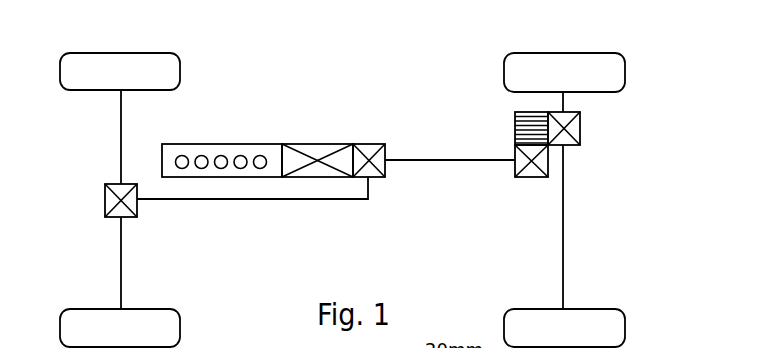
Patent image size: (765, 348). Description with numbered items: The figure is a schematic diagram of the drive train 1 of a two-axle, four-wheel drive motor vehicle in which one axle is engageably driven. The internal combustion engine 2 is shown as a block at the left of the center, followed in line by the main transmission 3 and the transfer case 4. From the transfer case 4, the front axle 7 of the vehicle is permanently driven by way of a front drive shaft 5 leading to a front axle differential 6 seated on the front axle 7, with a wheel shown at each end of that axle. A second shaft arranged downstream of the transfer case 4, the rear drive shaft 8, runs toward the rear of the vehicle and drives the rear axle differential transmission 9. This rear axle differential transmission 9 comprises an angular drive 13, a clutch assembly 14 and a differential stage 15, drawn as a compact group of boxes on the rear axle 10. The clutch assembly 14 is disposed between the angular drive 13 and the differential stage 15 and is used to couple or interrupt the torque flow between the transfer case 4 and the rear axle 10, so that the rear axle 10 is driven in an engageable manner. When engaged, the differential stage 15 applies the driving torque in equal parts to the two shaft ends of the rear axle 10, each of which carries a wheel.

The drive train 1 is at (290, 80).
The internal combustion engine 2 is at (211, 150).
The main transmission 3 is at (318, 143).
The transfer case 4 is at (371, 143).
The front drive shaft 5 is at (218, 201).
The front axle differential 6 is at (104, 201).
The front axle 7 is at (120, 152).
The rear drive shaft 8 is at (447, 181).
The rear axle differential transmission 9 is at (617, 108).
The rear axle 10 is at (564, 222).
The angular drive 13 is at (531, 178).
The clutch assembly 14 is at (514, 133).
The differential stage 15 is at (580, 128).